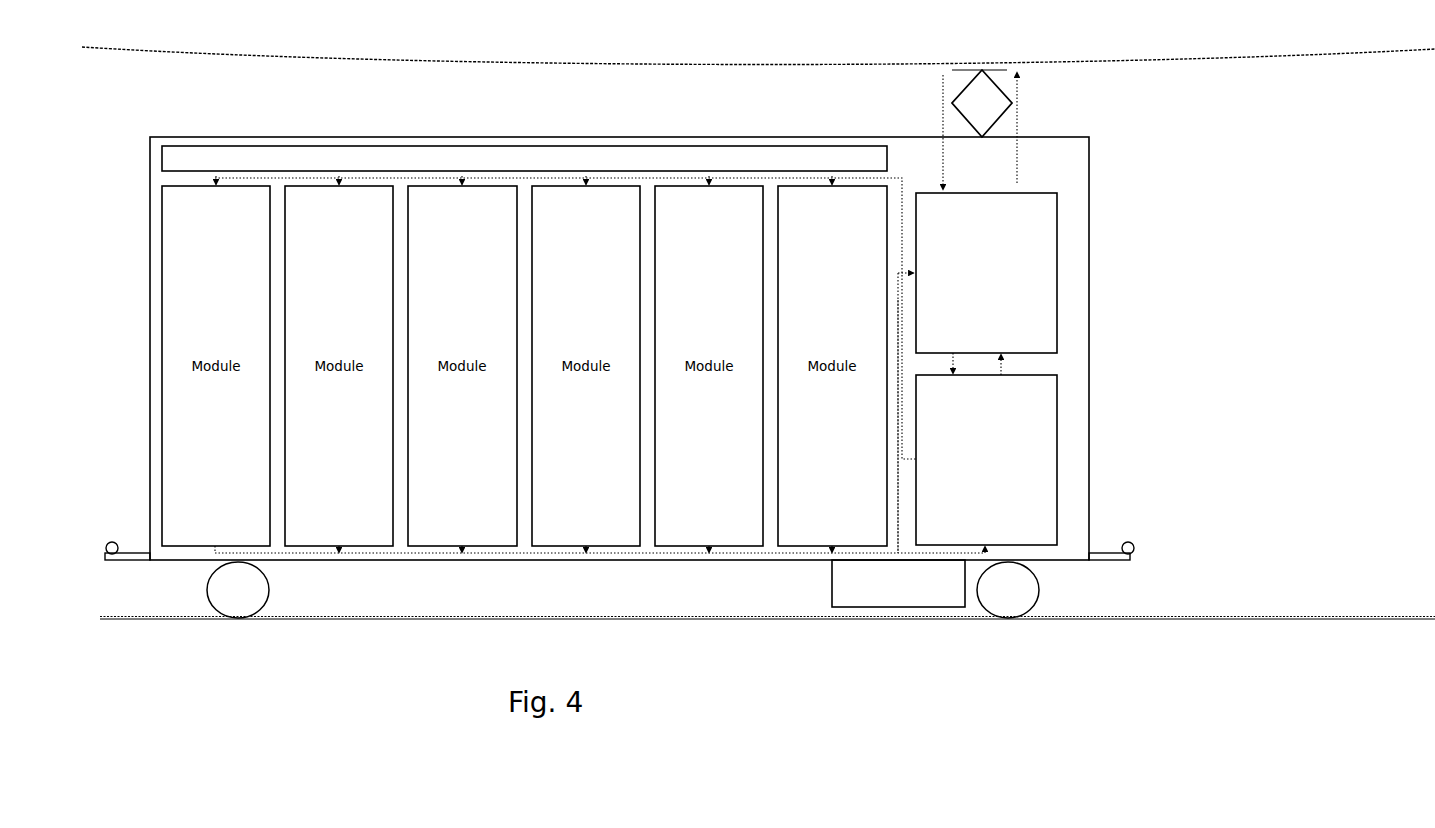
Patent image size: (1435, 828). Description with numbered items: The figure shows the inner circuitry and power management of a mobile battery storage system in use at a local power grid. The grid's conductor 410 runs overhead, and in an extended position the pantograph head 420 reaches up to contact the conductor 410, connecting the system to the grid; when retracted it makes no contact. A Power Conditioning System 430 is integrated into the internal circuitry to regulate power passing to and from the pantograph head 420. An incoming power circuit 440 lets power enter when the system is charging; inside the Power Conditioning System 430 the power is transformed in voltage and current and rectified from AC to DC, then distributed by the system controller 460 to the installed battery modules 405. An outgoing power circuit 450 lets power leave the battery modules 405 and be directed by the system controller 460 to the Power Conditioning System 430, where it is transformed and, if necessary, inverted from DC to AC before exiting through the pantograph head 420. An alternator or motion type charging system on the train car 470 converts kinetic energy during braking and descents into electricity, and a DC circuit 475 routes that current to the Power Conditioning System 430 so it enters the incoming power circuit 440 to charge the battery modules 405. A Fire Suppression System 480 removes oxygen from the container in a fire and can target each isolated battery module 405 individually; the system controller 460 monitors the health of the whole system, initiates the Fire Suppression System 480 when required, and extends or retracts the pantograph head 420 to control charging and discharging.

The battery modules 405 is at (176, 441).
The conductor 410 is at (758, 55).
The pantograph head 420 is at (977, 95).
The Power Conditioning System 430 is at (1041, 267).
The incoming power circuit 440 is at (927, 132).
The outgoing power circuit 450 is at (1034, 127).
The system controller 460 is at (1041, 430).
The train car 470 is at (840, 588).
The DC circuit 475 is at (900, 517).
The Fire Suppression System 480 is at (373, 158).